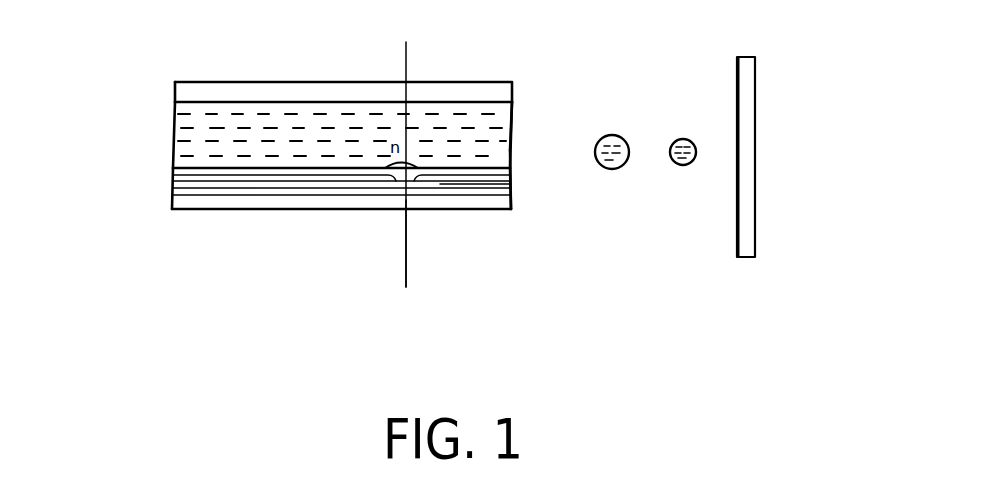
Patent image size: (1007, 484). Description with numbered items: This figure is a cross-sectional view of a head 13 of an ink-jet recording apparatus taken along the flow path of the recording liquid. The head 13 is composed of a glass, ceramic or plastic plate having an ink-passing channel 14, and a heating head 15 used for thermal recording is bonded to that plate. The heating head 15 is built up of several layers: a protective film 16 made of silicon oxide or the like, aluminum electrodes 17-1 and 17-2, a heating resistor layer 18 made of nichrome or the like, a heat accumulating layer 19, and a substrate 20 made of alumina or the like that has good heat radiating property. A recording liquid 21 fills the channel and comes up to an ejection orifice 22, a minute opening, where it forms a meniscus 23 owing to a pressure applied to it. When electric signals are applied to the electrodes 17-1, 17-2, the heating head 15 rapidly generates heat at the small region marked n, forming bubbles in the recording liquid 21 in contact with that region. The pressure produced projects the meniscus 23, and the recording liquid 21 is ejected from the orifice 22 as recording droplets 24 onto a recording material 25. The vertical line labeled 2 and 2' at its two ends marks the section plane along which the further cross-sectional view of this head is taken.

The optical axis line 2 is at (408, 147).
The optical axis line (lower end) 2' is at (404, 264).
The head 13 is at (282, 82).
The ink-passing channel 14 is at (360, 102).
The heating head 15 is at (323, 233).
The protective film 16 is at (207, 172).
The aluminum electrode 17-1 is at (249, 178).
The aluminum electrode 17-2 is at (490, 184).
The heating resistor layer 18 is at (303, 184).
The heat accumulating layer 19 is at (337, 194).
The substrate 20 is at (442, 210).
The recording liquid 21 is at (207, 112).
The ejection orifice 22 is at (522, 173).
The meniscus 23 is at (515, 145).
The recording droplets 24 is at (688, 128).
The recording material 25 is at (737, 72).